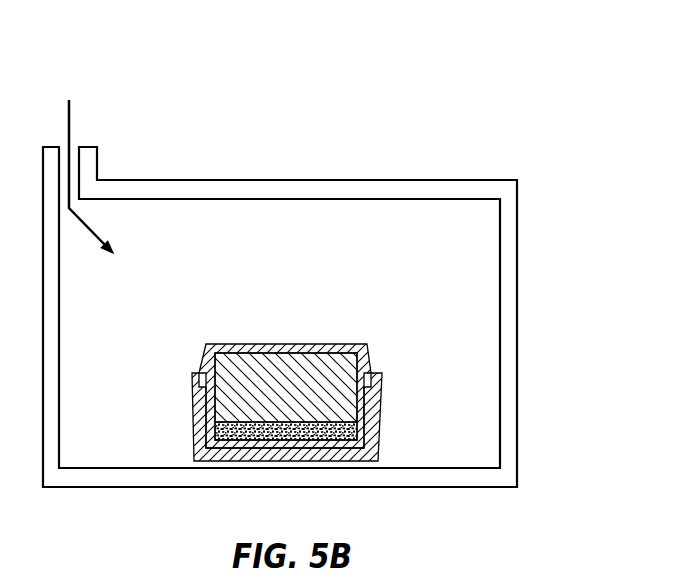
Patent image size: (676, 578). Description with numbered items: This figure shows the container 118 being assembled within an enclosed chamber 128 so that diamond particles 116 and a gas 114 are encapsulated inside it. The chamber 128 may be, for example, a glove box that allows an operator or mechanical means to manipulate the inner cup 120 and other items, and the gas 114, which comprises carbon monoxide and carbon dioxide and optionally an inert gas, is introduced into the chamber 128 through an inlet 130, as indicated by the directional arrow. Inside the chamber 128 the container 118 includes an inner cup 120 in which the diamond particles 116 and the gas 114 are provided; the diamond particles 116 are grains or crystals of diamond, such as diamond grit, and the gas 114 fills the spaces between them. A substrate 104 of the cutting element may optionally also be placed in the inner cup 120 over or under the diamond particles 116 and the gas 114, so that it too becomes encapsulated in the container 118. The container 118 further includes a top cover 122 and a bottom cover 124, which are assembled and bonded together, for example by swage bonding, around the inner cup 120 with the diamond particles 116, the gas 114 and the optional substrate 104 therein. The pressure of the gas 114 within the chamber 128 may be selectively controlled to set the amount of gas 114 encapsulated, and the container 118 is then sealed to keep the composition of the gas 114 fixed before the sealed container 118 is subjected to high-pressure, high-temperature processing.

The substrate 104 is at (283, 377).
The gas 114 is at (293, 232).
The diamond particles 116 is at (235, 443).
The container 118 is at (195, 349).
The inner cup 120 is at (370, 397).
The top cover 122 is at (367, 355).
The bottom cover 124 is at (372, 456).
The enclosed chamber 128 is at (507, 300).
The inlet 130 is at (81, 140).